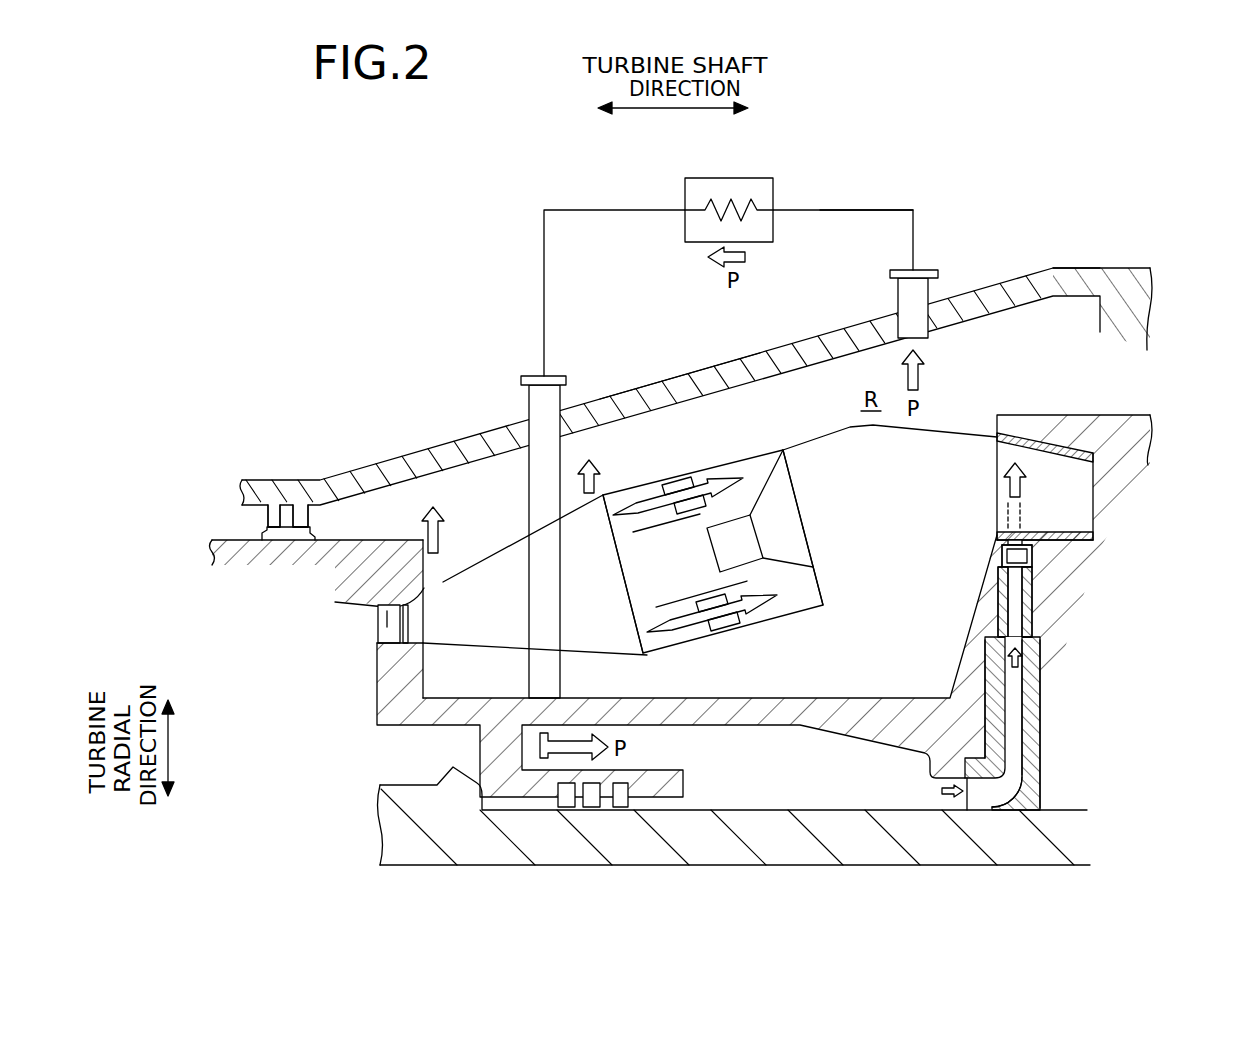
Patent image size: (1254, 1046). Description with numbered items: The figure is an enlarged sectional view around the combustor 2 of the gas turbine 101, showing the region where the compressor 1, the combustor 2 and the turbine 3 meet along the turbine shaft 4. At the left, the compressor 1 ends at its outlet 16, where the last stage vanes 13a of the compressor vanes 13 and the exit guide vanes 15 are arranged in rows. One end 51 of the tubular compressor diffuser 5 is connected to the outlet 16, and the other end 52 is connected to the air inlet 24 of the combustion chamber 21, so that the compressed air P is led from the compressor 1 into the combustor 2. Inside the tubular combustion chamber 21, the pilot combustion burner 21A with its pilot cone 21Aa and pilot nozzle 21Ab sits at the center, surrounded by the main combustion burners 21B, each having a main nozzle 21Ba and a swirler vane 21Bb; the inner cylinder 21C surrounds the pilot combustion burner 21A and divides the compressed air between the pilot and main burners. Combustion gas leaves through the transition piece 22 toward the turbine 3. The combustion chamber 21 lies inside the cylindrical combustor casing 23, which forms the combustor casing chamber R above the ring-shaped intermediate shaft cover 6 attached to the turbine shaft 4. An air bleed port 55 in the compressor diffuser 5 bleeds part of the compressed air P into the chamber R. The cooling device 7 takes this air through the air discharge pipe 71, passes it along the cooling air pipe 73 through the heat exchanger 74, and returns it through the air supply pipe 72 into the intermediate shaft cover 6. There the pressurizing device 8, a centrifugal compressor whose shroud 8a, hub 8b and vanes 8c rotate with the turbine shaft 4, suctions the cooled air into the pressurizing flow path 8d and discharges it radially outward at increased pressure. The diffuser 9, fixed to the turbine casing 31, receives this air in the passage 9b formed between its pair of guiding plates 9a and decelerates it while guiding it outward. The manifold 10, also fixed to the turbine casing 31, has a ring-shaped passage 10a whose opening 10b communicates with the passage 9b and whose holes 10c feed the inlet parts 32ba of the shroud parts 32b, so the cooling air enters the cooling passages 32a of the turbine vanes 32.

The compressor 1 is at (209, 473).
The combustor 2 is at (787, 338).
The turbine 3 is at (1184, 290).
The turbine shaft 4 is at (637, 853).
The compressor diffuser 5 is at (503, 545).
The intermediate shaft cover 6 is at (745, 700).
The cooling device 7 is at (604, 191).
The pressurizing device 8 is at (1054, 701).
The shroud 8a is at (985, 667).
The hub 8b is at (1040, 750).
The vanes 8c is at (1013, 727).
The pressurizing flow path 8d is at (1007, 783).
The diffuser 9 is at (1037, 600).
The guiding plates 9a is at (993, 600).
The passage 9b is at (1000, 623).
The manifold 10 is at (1037, 555).
The ring-shaped passage 10a is at (1000, 550).
The opening 10b is at (997, 570).
The holes 10c is at (1037, 577).
The compressor vanes 13 is at (288, 450).
The last stage vanes 13a is at (387, 605).
The exit guide vanes 15 is at (413, 613).
The outlet 16 is at (428, 625).
The combustion chamber 21 is at (757, 442).
The pilot combustion burner 21A is at (806, 458).
The pilot cone 21Aa is at (800, 569).
The pilot nozzle 21Ab is at (860, 575).
The main combustion burners 21B is at (703, 472).
The main nozzle 21Ba is at (661, 480).
The swirler vane 21Bb is at (684, 478).
The inner cylinder 21C is at (789, 605).
The transition piece 22 is at (957, 455).
The combustor casing 23 is at (840, 333).
The air inlet 24 is at (603, 650).
The turbine casing 31 is at (1021, 414).
The turbine vanes 32 is at (997, 498).
The cooling passage 32a is at (1020, 517).
The shroud part 32b is at (1093, 542).
The inlet part 32ba is at (1000, 530).
The one end 51 is at (428, 646).
The other end 52 is at (641, 652).
The air bleed port 55 is at (435, 584).
The air discharge pipe 71 is at (931, 290).
The air supply pipe 72 is at (521, 378).
The cooling air pipe 73 is at (868, 209).
The heat exchanger 74 is at (776, 178).
The gas turbine 101 is at (1046, 206).